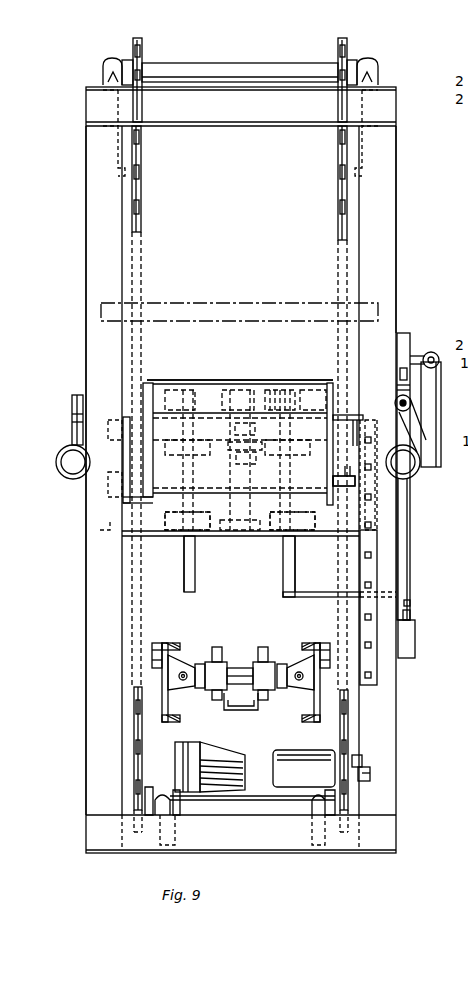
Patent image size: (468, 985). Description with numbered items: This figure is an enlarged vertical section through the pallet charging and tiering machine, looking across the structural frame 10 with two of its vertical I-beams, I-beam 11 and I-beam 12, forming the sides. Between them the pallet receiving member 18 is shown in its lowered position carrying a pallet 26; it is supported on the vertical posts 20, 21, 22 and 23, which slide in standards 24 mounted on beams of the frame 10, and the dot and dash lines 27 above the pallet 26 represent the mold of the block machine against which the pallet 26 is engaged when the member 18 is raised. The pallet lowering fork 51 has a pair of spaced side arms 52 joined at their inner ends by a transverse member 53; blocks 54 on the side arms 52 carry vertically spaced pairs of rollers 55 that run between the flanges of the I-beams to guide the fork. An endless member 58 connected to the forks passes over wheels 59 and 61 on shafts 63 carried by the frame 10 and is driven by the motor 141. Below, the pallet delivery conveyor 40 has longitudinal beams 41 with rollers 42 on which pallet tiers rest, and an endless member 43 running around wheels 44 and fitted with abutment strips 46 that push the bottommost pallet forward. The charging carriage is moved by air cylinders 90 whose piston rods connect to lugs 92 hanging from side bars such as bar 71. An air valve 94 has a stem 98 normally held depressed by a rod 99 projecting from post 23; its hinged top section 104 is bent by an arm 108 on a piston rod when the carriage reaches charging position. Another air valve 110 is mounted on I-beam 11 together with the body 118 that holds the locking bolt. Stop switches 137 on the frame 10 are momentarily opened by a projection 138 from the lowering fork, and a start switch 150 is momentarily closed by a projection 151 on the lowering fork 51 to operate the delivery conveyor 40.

The structural frame 10 is at (398, 192).
The vertical I-beam 11 is at (383, 222).
The vertical I-beam 12 is at (90, 218).
The pallet receiving member 18 is at (238, 379).
The vertical post 20 is at (305, 582).
The vertical post 21 is at (185, 580).
The vertical post 22 is at (190, 562).
The vertical post 23 is at (296, 578).
The standard 24 is at (180, 540).
The pallet 26 is at (186, 379).
The dot and dash lines representing a mold 27 is at (196, 312).
The pallet delivery conveyor 40 is at (300, 726).
The longitudinal beam 41 is at (162, 701).
The roller 42 is at (160, 655).
The endless member 43 is at (215, 661).
The wheel 44 is at (212, 665).
The abutment strip 46 is at (240, 712).
The pallet lowering fork 51 is at (326, 538).
The side arm 52 is at (330, 466).
The transverse member 53 is at (262, 388).
The block 54 is at (132, 416).
The roller 55 is at (108, 425).
The endless member 58 is at (141, 183).
The wheel 59 is at (140, 40).
The wheel 61 is at (140, 832).
The shaft 63 is at (200, 67).
The longitudinal bar 71 is at (72, 405).
The air cylinder 90 is at (60, 470).
The lug 92 is at (76, 430).
The air valve 94 is at (413, 641).
The valve stem 98 is at (411, 615).
The rod 99 is at (306, 598).
The top section of valve stem 104 is at (411, 604).
The arm 108 is at (408, 520).
The air valve 110 is at (398, 403).
The body 118 is at (401, 333).
The stop switch 137 is at (371, 555).
The projection 138 is at (344, 413).
The motor 141 is at (297, 760).
The start switch 150 is at (362, 761).
The projection 151 is at (356, 481).